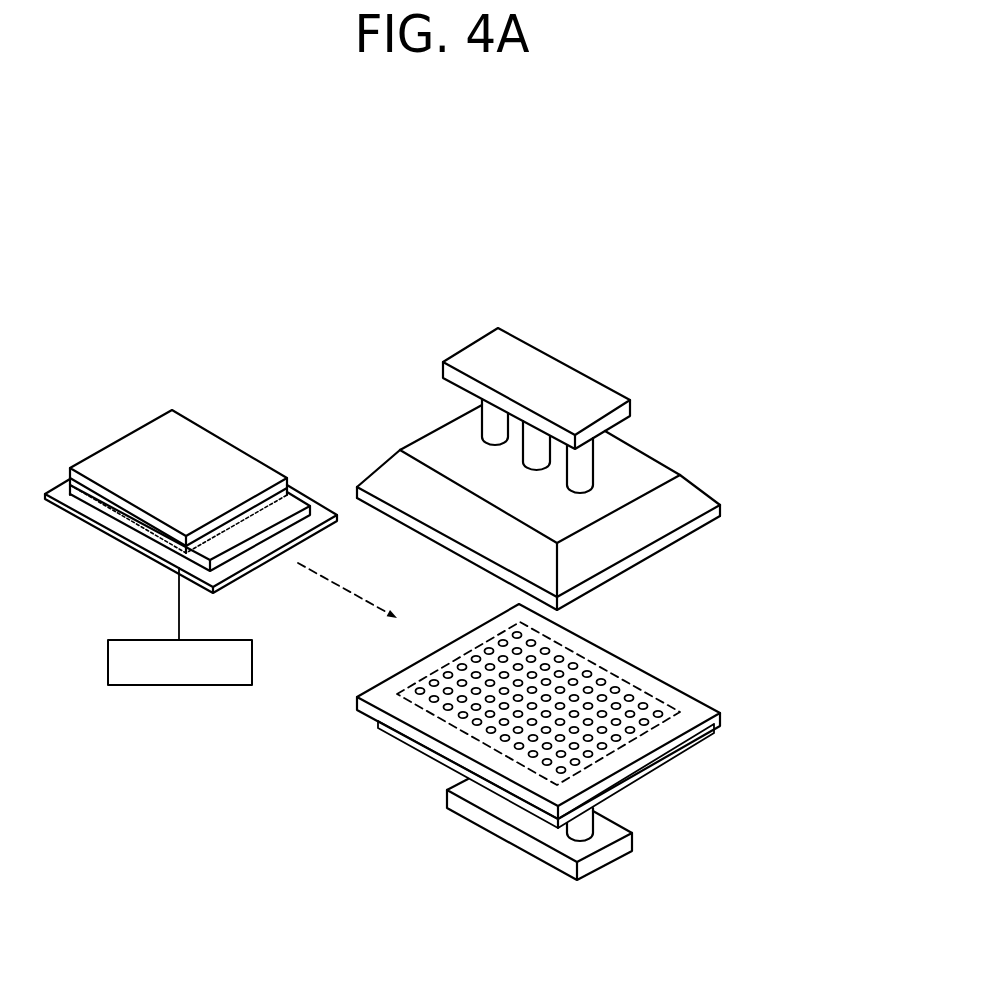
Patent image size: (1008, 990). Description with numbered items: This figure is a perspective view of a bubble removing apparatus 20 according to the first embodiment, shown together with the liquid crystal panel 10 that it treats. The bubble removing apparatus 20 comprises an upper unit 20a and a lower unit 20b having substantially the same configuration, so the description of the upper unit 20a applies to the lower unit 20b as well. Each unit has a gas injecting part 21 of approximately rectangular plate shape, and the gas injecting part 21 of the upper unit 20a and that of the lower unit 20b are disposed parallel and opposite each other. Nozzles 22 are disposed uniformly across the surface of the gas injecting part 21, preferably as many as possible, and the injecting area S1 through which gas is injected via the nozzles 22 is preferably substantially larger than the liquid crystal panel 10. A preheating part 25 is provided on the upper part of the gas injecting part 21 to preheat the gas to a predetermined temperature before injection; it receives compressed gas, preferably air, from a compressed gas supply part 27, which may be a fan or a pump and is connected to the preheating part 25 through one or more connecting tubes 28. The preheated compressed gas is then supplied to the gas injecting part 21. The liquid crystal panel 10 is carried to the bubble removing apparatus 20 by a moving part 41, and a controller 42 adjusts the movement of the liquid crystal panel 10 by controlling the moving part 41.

The liquid crystal panel 10 is at (134, 394).
The moving part 41 is at (127, 532).
The controller 42 is at (182, 686).
The bubble removing apparatus 20 is at (833, 575).
The upper unit 20a is at (731, 542).
The lower unit 20b is at (732, 698).
The gas injecting part 21 is at (721, 506).
The preheating part 25 is at (648, 462).
The compressed gas supply part 27 is at (587, 382).
The connecting tubes 28 is at (483, 420).
The nozzles 22 is at (660, 715).
The injecting area S1 is at (622, 748).